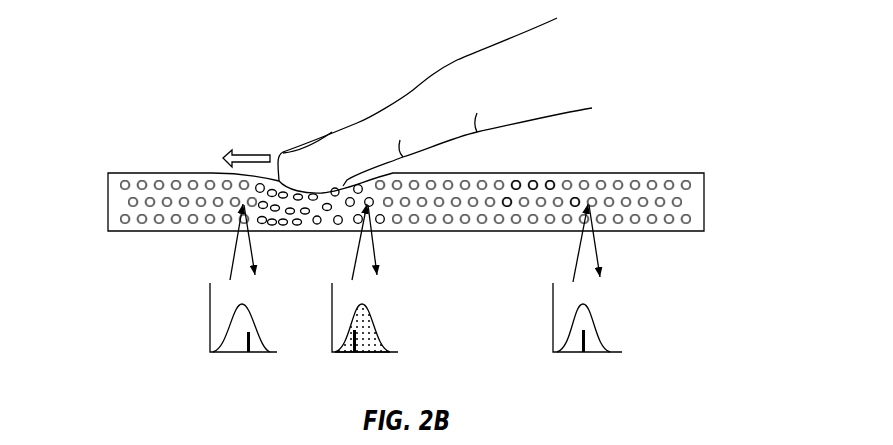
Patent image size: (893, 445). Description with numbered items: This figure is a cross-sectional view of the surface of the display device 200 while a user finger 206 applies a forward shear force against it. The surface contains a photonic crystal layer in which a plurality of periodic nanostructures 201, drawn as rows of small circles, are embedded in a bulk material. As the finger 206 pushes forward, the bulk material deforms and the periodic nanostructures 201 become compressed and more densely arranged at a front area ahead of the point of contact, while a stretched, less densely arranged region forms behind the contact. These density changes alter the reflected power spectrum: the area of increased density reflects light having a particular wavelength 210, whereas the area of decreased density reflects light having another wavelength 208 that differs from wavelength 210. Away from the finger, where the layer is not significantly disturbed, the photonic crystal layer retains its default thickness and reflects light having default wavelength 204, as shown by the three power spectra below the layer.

The display device 200 is at (100, 133).
The periodic nanostructures 201 is at (574, 198).
The default wavelength 204 is at (596, 327).
The user finger 206 is at (385, 103).
The wavelength 208 is at (370, 323).
The particular wavelength 210 is at (245, 303).